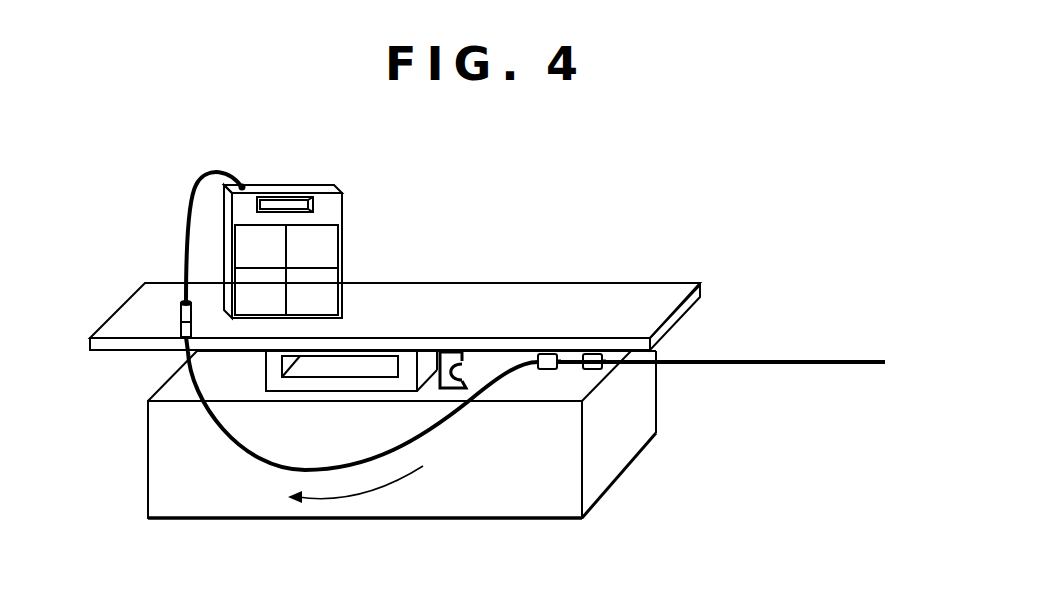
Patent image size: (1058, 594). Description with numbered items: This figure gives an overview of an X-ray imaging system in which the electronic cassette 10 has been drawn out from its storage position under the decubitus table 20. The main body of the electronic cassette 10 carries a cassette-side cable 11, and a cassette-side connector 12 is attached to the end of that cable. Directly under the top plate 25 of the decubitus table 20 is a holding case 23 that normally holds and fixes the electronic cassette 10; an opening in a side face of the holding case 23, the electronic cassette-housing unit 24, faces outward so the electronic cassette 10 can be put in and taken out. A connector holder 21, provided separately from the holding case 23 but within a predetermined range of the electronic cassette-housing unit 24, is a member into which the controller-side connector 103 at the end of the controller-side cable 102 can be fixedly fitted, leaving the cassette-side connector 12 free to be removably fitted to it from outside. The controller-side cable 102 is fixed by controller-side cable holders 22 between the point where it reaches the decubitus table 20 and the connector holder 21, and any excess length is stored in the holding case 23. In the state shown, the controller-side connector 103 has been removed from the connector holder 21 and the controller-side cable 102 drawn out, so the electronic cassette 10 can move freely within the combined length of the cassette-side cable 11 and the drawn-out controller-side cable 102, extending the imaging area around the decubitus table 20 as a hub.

The electronic cassette 10 is at (343, 202).
The cassette-side cable 11 is at (184, 206).
The cassette-side connector 12 is at (181, 312).
The controller-side connector 103 is at (182, 333).
The controller-side cable 102 is at (198, 392).
The decubitus table 20 is at (550, 505).
The connector holder 21 is at (450, 357).
The controller-side cable holders 22 is at (545, 370).
The holding case 23 is at (407, 357).
The electronic cassette-housing unit 24 is at (368, 357).
The top plate 25 is at (585, 300).